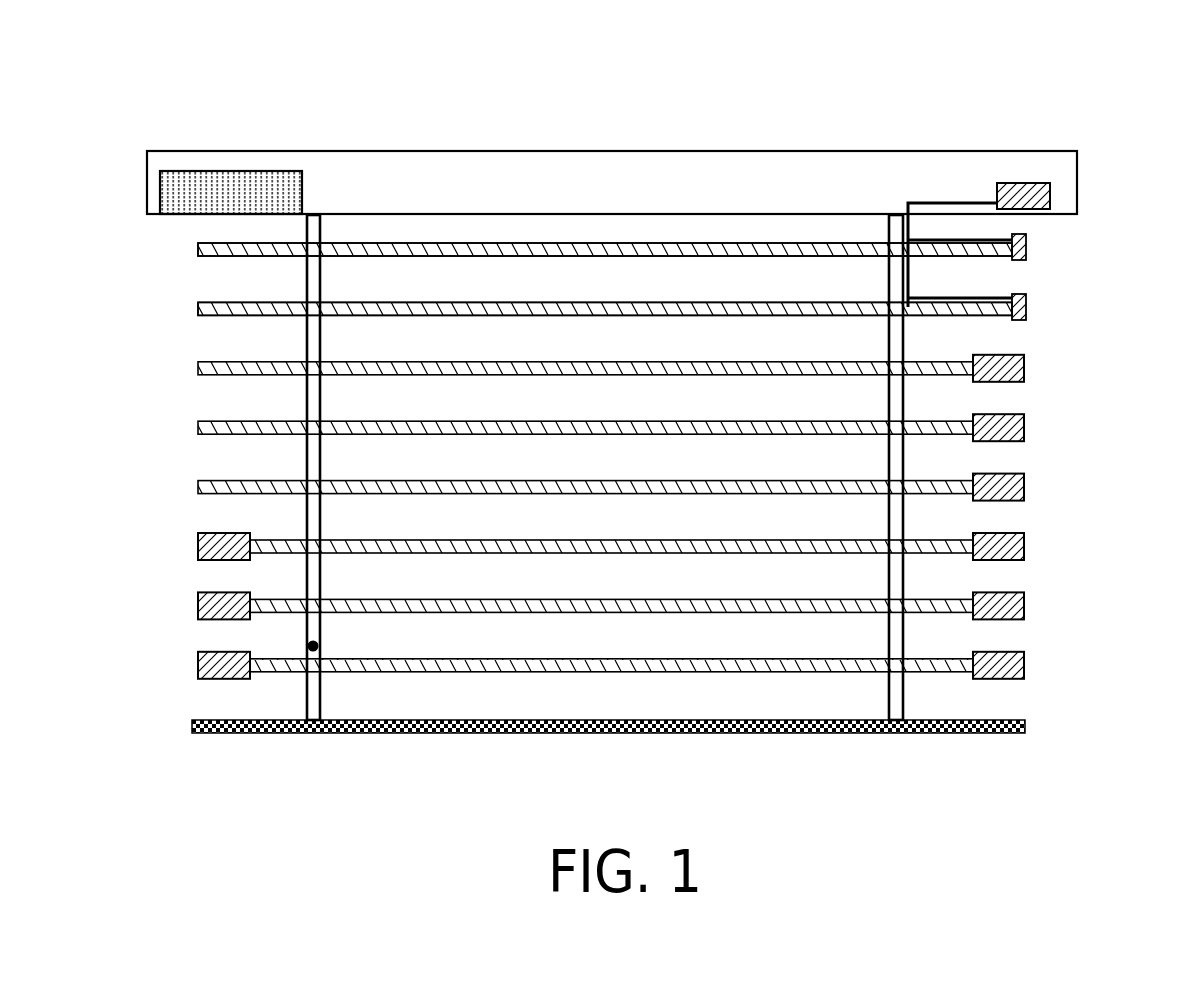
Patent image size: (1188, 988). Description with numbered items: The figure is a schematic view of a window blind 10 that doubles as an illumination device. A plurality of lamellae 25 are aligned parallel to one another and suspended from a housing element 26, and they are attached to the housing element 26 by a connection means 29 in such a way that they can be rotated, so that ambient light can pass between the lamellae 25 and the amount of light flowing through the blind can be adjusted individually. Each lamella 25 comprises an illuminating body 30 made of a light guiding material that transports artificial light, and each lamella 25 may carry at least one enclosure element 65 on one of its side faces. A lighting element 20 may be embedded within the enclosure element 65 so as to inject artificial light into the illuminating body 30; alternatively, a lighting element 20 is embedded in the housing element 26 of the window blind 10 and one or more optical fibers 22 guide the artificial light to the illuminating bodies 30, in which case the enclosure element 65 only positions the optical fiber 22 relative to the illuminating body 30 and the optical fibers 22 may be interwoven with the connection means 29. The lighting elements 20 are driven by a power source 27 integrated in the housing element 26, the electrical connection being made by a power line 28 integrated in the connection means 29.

The window blind 10 is at (1110, 122).
The lighting element 20 is at (1022, 195).
The optical fiber 22 is at (908, 278).
The lamella 25 is at (200, 248).
The housing element 26 is at (548, 190).
The power source 27 is at (218, 190).
The power line 28 is at (905, 704).
The connection means 29 is at (318, 648).
The illuminating body 30 is at (200, 305).
The enclosure element 65 is at (1013, 427).